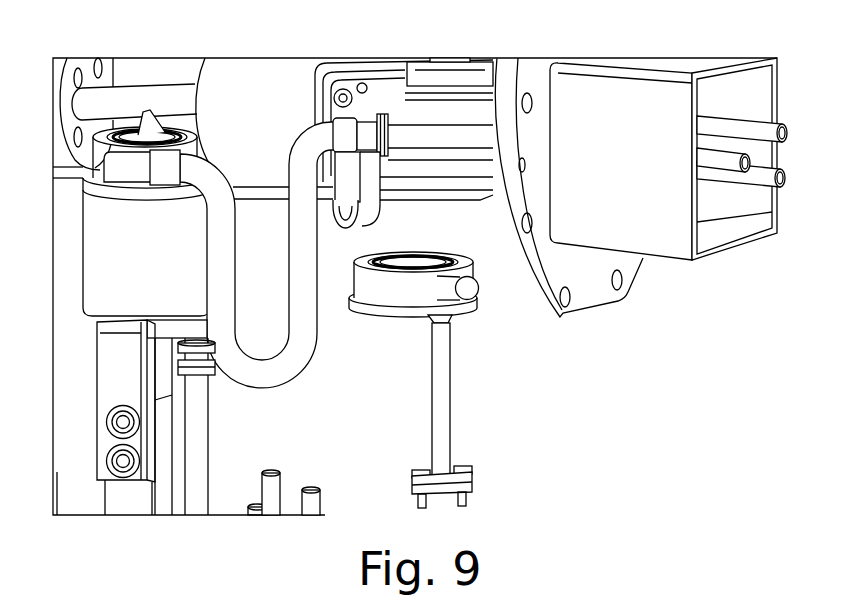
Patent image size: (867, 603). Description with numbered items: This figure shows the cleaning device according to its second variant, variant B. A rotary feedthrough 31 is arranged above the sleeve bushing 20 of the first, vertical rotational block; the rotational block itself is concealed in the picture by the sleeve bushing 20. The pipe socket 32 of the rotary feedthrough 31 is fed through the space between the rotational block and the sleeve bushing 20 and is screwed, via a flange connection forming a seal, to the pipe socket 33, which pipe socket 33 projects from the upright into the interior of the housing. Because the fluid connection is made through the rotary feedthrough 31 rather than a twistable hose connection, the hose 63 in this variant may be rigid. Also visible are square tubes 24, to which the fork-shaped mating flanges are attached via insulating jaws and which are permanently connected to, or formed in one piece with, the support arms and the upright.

The sleeve bushing 20 is at (83, 316).
The square tube 24 is at (463, 121).
The rotary feedthrough 31 is at (163, 134).
The pipe socket 32 is at (453, 347).
The pipe socket 33 is at (200, 428).
The hose 63 is at (307, 365).